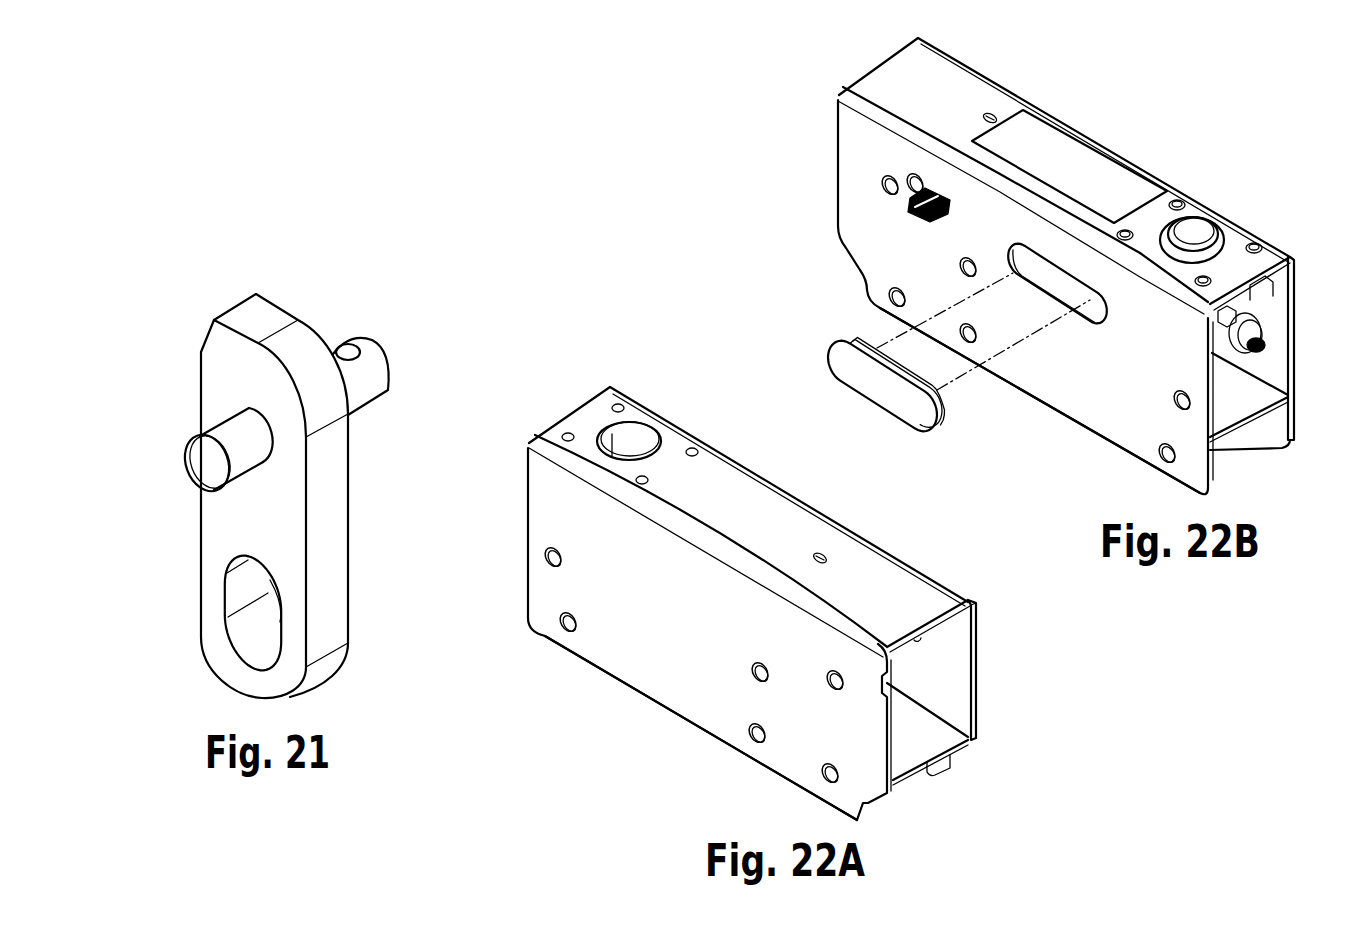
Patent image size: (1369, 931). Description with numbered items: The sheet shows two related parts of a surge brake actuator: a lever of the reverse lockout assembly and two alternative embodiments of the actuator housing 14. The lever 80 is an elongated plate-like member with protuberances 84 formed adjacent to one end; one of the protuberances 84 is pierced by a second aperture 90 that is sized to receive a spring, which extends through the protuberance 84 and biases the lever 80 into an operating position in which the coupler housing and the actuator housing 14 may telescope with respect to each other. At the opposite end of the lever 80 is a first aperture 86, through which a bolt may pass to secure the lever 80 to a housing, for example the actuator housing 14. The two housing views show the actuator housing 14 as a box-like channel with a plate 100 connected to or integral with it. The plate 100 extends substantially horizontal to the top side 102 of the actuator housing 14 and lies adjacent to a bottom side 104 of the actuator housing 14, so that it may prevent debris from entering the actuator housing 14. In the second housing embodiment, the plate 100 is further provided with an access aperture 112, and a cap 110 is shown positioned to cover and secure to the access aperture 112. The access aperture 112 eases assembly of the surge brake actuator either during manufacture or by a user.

In FIG. 22A, the actuator housing 14 is at (688, 660).
In FIG. 22B, the actuator housing 14 is at (1054, 355).
In FIG. 21, the lever 80 is at (306, 509).
In FIG. 21, the protuberances 84 is at (200, 452).
In FIG. 21, the first aperture 86 is at (253, 625).
In FIG. 21, the second aperture 90 is at (345, 348).
In FIG. 22A, the plate 100 is at (933, 738).
In FIG. 22B, the plate 100 is at (1222, 410).
In FIG. 22A, the top side 102 is at (740, 510).
In FIG. 22B, the top side 102 is at (930, 93).
In FIG. 22A, the bottom side 104 is at (817, 797).
In FIG. 22B, the bottom side 104 is at (1168, 483).
In FIG. 22B, the cap 110 is at (845, 360).
In FIG. 22B, the access aperture 112 is at (1060, 272).